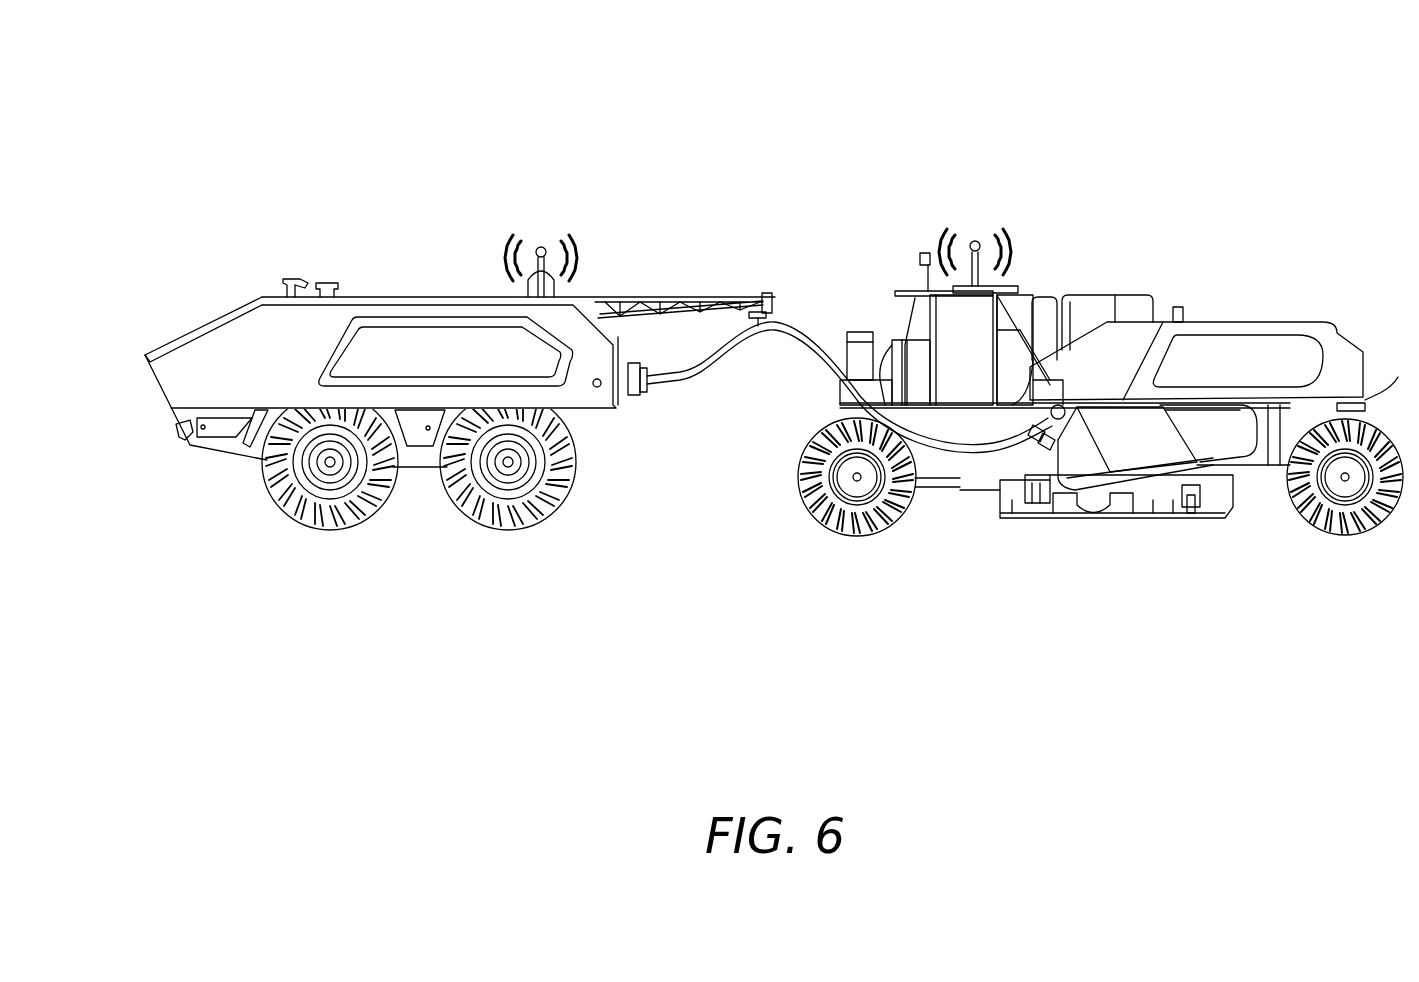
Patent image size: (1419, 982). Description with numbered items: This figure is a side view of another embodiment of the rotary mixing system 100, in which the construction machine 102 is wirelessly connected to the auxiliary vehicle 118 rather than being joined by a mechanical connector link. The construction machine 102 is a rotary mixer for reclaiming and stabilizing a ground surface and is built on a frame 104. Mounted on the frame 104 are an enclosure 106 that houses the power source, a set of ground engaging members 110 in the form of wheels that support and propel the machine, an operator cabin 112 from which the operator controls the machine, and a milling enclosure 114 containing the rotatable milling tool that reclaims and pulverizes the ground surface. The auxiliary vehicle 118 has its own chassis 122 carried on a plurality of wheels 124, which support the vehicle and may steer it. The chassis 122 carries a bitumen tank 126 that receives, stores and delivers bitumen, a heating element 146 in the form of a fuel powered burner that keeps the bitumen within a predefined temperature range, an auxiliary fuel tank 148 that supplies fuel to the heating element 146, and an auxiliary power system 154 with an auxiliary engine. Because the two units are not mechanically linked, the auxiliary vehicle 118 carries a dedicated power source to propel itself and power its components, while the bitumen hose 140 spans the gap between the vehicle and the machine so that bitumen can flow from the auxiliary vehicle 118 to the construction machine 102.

The rotary mixing system 100 is at (968, 124).
The construction machine 102 is at (1220, 266).
The frame 104 is at (945, 462).
The enclosure 106 is at (1240, 367).
The ground engaging members 110 is at (852, 527).
The operator cabin 112 is at (1012, 278).
The milling enclosure 114 is at (1144, 449).
The auxiliary vehicle 118 is at (451, 227).
The chassis 122 is at (425, 456).
The wheels 124 is at (323, 530).
The bitumen tank 126 is at (452, 366).
The bitumen hose 140 is at (722, 346).
The heating element 146 is at (261, 287).
The auxiliary fuel tank 148 is at (226, 444).
The auxiliary power system 154 is at (185, 389).